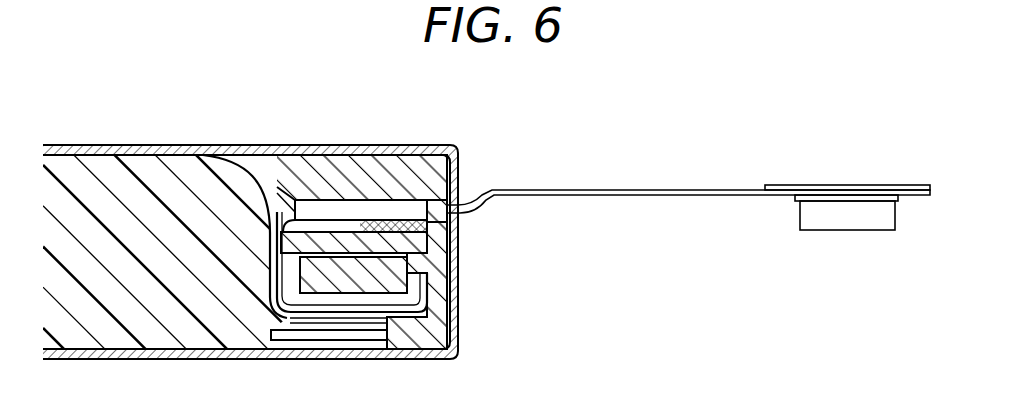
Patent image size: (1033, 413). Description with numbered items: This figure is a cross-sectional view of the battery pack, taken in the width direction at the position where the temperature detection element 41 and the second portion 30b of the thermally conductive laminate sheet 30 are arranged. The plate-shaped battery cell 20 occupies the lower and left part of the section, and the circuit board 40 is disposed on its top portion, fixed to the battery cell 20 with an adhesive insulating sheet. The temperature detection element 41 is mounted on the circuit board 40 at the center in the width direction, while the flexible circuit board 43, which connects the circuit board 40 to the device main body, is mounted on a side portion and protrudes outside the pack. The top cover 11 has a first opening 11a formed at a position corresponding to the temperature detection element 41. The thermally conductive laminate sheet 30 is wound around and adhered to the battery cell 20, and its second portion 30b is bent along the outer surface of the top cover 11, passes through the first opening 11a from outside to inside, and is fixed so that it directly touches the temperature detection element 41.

The battery cell 20 is at (122, 169).
The thermally conductive laminate sheet 30 is at (240, 146).
The second portion 30b is at (460, 167).
The top cover 11 is at (398, 175).
The first opening 11a is at (457, 226).
The circuit board 40 is at (332, 242).
The temperature detection element 41 is at (410, 265).
The flexible circuit board 43 is at (640, 186).